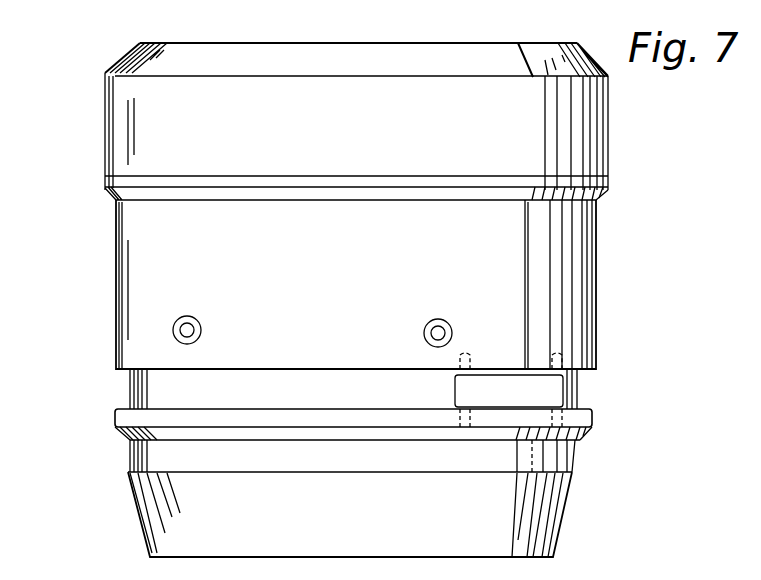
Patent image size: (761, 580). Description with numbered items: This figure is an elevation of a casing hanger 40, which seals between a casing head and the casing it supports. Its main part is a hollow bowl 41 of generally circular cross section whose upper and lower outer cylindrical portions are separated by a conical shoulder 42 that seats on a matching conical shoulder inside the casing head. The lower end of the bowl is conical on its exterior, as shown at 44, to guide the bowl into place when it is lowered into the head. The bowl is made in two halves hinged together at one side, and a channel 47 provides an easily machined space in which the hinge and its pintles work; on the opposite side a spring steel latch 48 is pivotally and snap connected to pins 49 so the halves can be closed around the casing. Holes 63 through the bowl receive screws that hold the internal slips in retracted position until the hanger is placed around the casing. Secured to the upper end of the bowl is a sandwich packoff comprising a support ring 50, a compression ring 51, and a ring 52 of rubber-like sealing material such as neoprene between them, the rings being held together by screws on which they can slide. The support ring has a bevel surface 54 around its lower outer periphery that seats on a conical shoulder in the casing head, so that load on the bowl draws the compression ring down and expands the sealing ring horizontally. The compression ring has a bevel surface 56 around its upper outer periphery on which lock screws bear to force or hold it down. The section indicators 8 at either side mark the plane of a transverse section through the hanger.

The casing hanger 40 is at (596, 253).
The hollow bowl 41 is at (127, 263).
The conical shoulder 42 is at (118, 434).
The conical lower end of bowl 44 is at (143, 505).
The channel 47 is at (129, 385).
The spring steel latch 48 is at (490, 385).
The pins 49 is at (458, 415).
The support ring 50 is at (105, 182).
The compression ring 51 is at (158, 43).
The ring of rubber-like sealing material 52 is at (108, 118).
The bevel surface 54 is at (110, 192).
The bevel surface 56 is at (125, 58).
The hole 63 is at (201, 329).
The section line 8- 8 is at (44, 369).